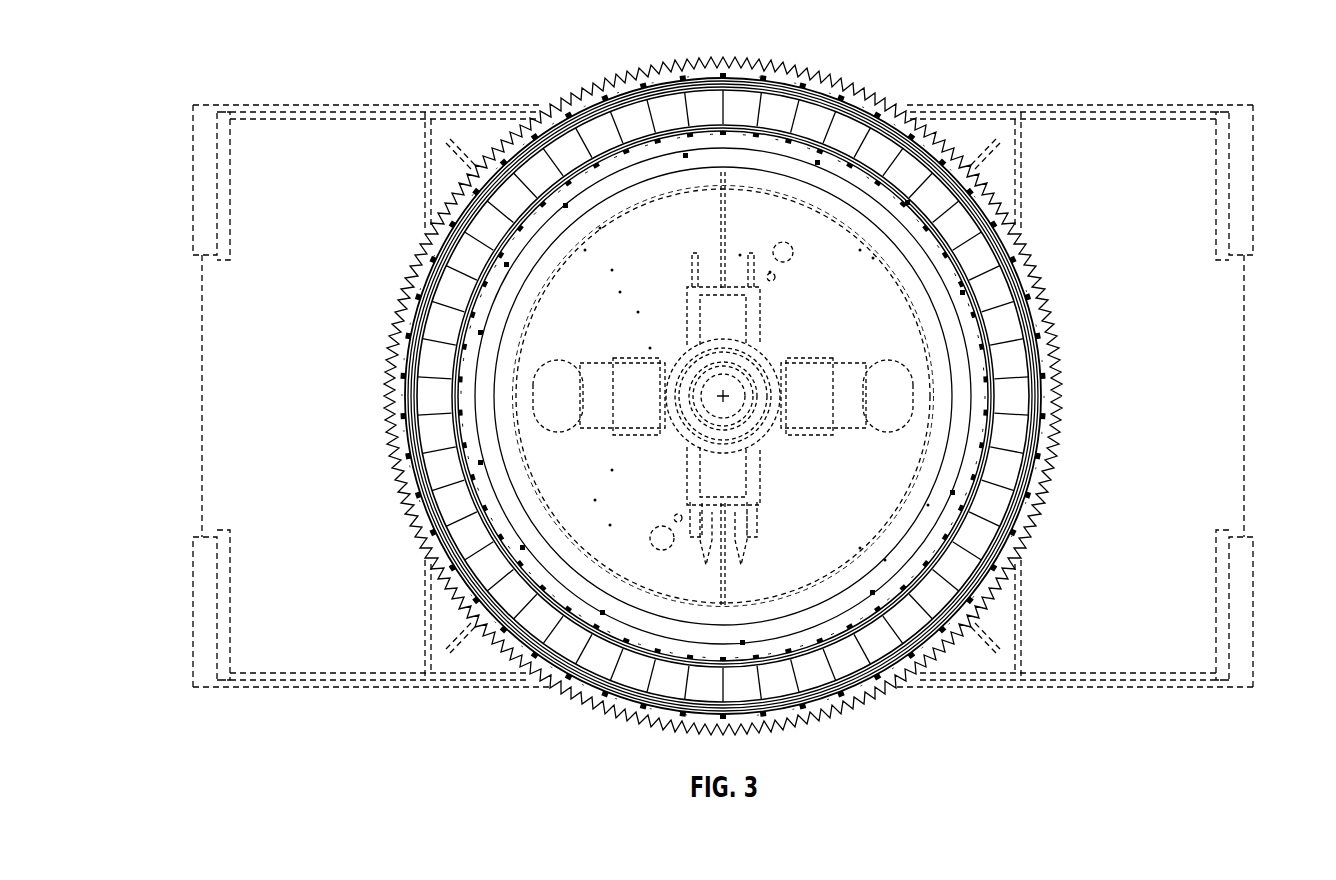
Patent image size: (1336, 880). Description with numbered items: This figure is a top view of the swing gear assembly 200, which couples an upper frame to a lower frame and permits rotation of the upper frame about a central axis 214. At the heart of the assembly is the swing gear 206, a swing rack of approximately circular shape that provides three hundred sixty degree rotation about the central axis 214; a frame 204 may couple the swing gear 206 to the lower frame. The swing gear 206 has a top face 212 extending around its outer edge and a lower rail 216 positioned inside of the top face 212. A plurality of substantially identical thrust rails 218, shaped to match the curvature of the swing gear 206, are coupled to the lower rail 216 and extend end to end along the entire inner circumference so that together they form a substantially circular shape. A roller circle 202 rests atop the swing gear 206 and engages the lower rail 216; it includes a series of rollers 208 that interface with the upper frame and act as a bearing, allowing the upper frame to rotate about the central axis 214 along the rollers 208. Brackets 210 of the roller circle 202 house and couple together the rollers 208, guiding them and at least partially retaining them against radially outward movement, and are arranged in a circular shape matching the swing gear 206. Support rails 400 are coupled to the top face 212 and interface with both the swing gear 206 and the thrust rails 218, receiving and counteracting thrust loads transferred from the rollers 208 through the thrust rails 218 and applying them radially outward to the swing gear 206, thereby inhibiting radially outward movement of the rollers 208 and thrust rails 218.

The swing gear assembly 200 is at (575, 66).
The roller circle 202 is at (605, 677).
The frame 204 is at (1238, 330).
The swing gear 206 is at (848, 133).
The rollers 208 is at (857, 117).
The brackets 210 is at (943, 617).
The top face 212 is at (745, 72).
The central axis 214 is at (723, 396).
The lower rail 216 is at (1000, 385).
The thrust rails 218 is at (655, 703).
The support rails 400 is at (553, 673).